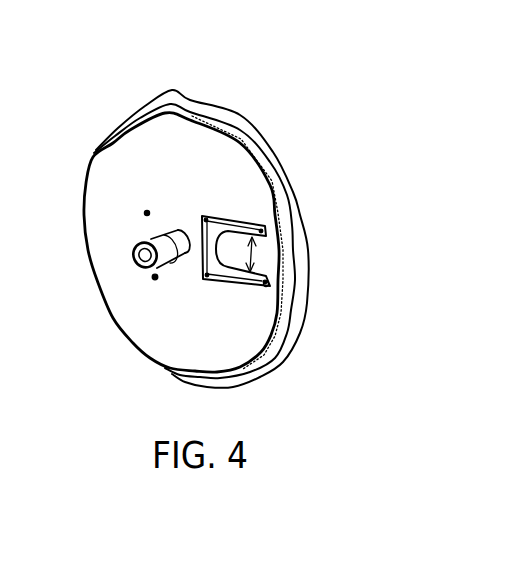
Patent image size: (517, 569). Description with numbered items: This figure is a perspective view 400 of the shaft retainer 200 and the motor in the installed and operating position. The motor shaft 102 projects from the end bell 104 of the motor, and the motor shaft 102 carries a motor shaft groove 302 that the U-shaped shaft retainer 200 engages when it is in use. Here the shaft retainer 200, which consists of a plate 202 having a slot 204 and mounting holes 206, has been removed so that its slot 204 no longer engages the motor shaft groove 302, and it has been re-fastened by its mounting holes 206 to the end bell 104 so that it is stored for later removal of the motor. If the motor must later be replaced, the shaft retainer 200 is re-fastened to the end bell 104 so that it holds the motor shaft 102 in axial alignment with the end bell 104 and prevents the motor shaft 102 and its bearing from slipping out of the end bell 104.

The perspective view 400 is at (330, 121).
The end bell 104 is at (290, 180).
The motor shaft 102 is at (134, 265).
The motor shaft groove 302 is at (157, 281).
The shaft retainer 200 is at (291, 235).
The plate 202 is at (229, 283).
The slot 204 is at (252, 258).
The mounting holes 206 is at (269, 286).